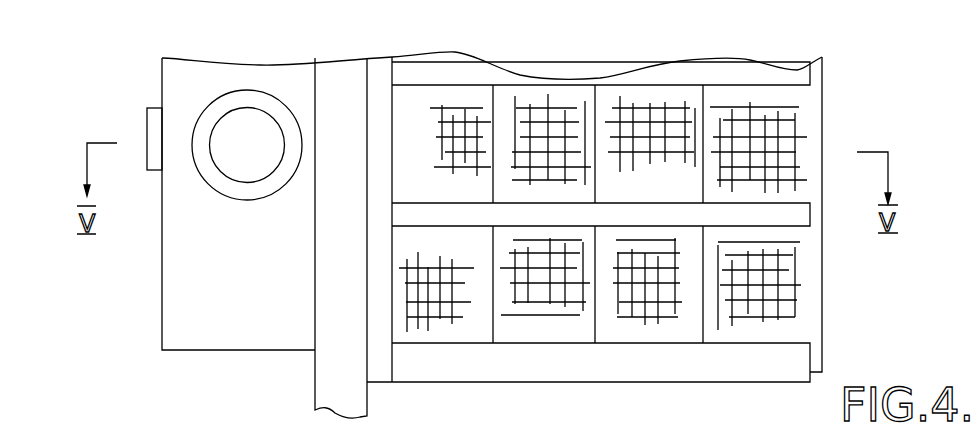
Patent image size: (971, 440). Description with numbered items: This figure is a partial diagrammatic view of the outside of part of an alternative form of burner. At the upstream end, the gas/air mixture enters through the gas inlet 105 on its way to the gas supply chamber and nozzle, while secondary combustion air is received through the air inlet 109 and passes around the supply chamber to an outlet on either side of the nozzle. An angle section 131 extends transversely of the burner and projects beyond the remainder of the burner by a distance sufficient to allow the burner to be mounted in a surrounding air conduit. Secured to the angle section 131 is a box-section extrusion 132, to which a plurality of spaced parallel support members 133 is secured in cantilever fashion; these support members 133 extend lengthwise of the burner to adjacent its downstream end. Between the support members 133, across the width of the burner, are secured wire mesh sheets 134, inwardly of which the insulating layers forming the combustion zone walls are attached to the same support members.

The gas inlet 105 is at (248, 170).
The air inlet 109 is at (150, 127).
The angle section 131 is at (333, 387).
The box-section extrusion 132 is at (375, 350).
The support member 133 is at (795, 76).
The wire mesh sheet 134 is at (732, 320).